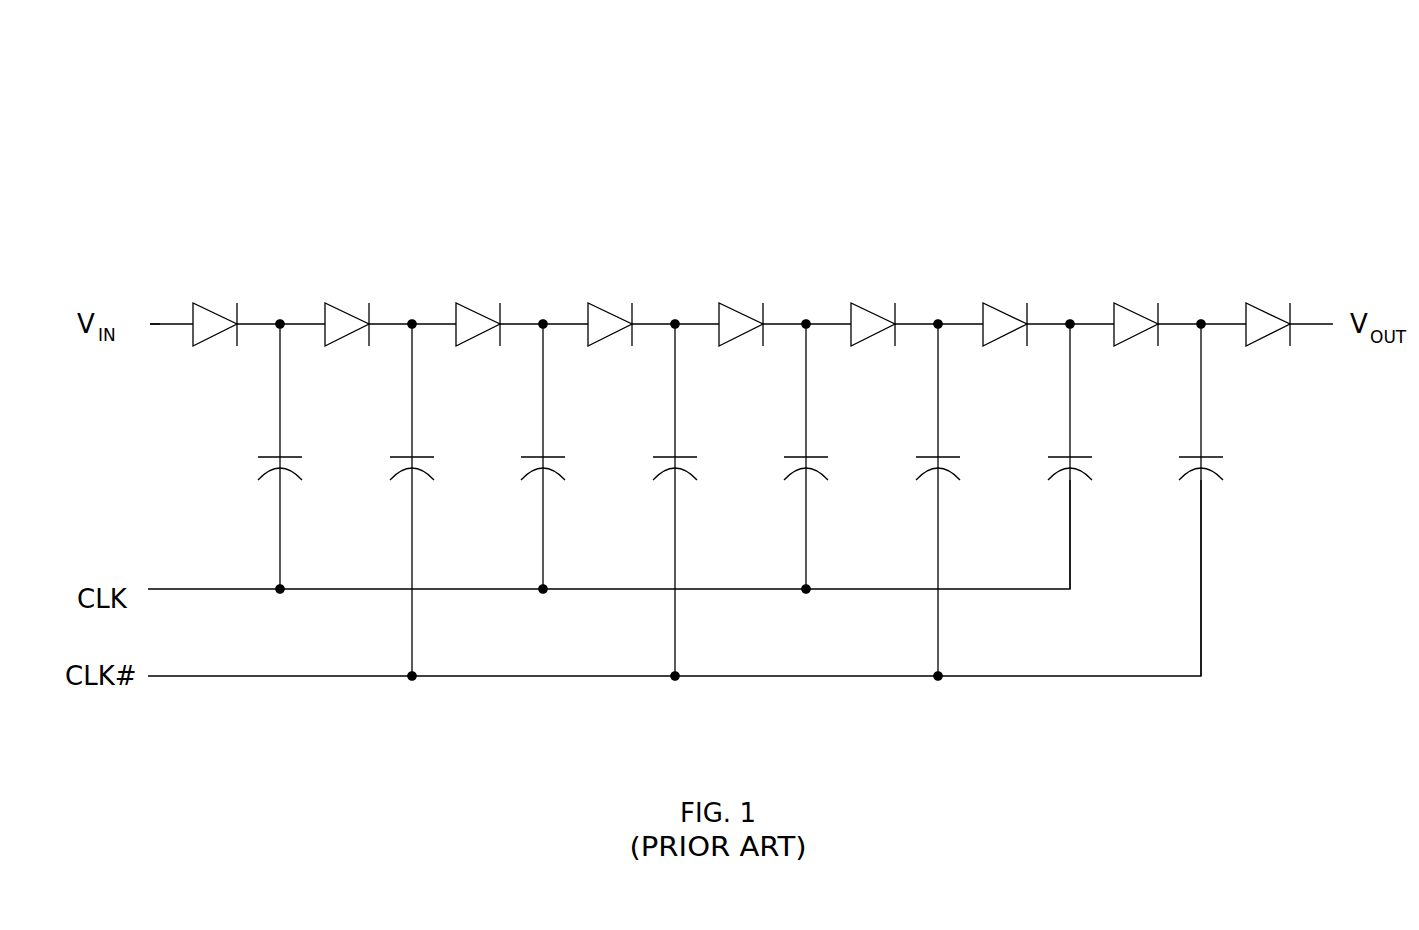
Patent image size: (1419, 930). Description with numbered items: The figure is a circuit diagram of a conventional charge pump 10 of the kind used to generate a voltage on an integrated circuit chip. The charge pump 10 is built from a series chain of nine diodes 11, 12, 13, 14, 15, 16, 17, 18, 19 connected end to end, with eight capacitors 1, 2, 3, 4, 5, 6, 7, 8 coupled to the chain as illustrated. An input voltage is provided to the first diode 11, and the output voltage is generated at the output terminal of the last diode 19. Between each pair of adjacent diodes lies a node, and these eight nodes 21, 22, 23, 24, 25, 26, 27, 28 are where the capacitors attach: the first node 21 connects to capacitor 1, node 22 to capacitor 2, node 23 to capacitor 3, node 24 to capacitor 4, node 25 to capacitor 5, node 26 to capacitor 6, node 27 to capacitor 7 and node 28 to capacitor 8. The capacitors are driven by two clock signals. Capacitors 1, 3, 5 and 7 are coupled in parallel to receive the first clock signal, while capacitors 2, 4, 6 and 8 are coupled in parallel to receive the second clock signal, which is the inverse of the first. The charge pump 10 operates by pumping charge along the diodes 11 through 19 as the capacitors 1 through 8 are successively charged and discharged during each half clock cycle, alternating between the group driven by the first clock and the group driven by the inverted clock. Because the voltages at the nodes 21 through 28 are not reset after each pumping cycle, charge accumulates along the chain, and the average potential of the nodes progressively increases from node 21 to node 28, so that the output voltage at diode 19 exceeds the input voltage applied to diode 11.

The charge pump 10 is at (190, 208).
The capacitor 1 is at (270, 457).
The capacitor 2 is at (402, 457).
The capacitor 3 is at (533, 457).
The capacitor 4 is at (665, 457).
The capacitor 5 is at (796, 457).
The capacitor 6 is at (928, 457).
The capacitor 7 is at (1060, 457).
The capacitor 8 is at (1191, 457).
The diode 11 is at (217, 307).
The diode 12 is at (349, 307).
The diode 13 is at (480, 307).
The diode 14 is at (612, 307).
The diode 15 is at (743, 307).
The diode 16 is at (875, 307).
The diode 17 is at (1007, 307).
The diode 18 is at (1138, 307).
The diode 19 is at (1270, 307).
The node 21 is at (280, 307).
The node 22 is at (412, 307).
The node 23 is at (543, 307).
The node 24 is at (675, 307).
The node 25 is at (806, 307).
The node 26 is at (938, 307).
The node 27 is at (1070, 307).
The node 28 is at (1201, 307).